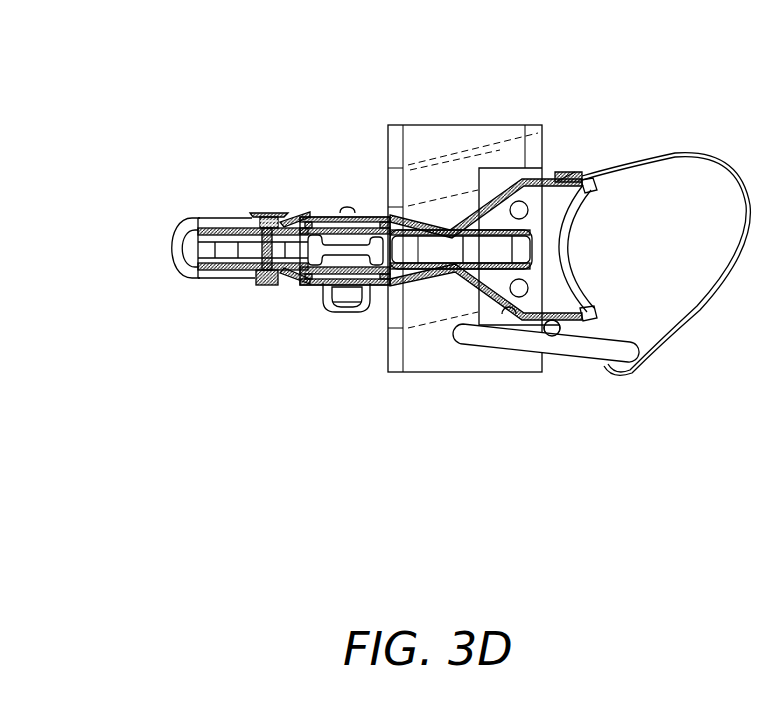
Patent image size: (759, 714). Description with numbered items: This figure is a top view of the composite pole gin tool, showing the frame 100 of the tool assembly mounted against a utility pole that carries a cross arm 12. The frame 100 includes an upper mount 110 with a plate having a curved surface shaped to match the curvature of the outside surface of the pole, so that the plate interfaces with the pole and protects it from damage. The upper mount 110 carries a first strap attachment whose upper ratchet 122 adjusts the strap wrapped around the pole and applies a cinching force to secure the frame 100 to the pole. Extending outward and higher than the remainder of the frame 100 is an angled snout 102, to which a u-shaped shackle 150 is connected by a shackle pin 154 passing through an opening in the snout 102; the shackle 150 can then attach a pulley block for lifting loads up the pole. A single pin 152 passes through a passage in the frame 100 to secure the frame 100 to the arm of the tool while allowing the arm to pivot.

The cross arm 12 is at (437, 137).
The upper mount 110 is at (554, 205).
The frame 100 is at (292, 235).
The shackle pin 154 is at (268, 212).
The shackle 150 is at (176, 247).
The snout 102 is at (216, 270).
The pin 152 is at (342, 313).
The upper ratchet 122 is at (587, 353).